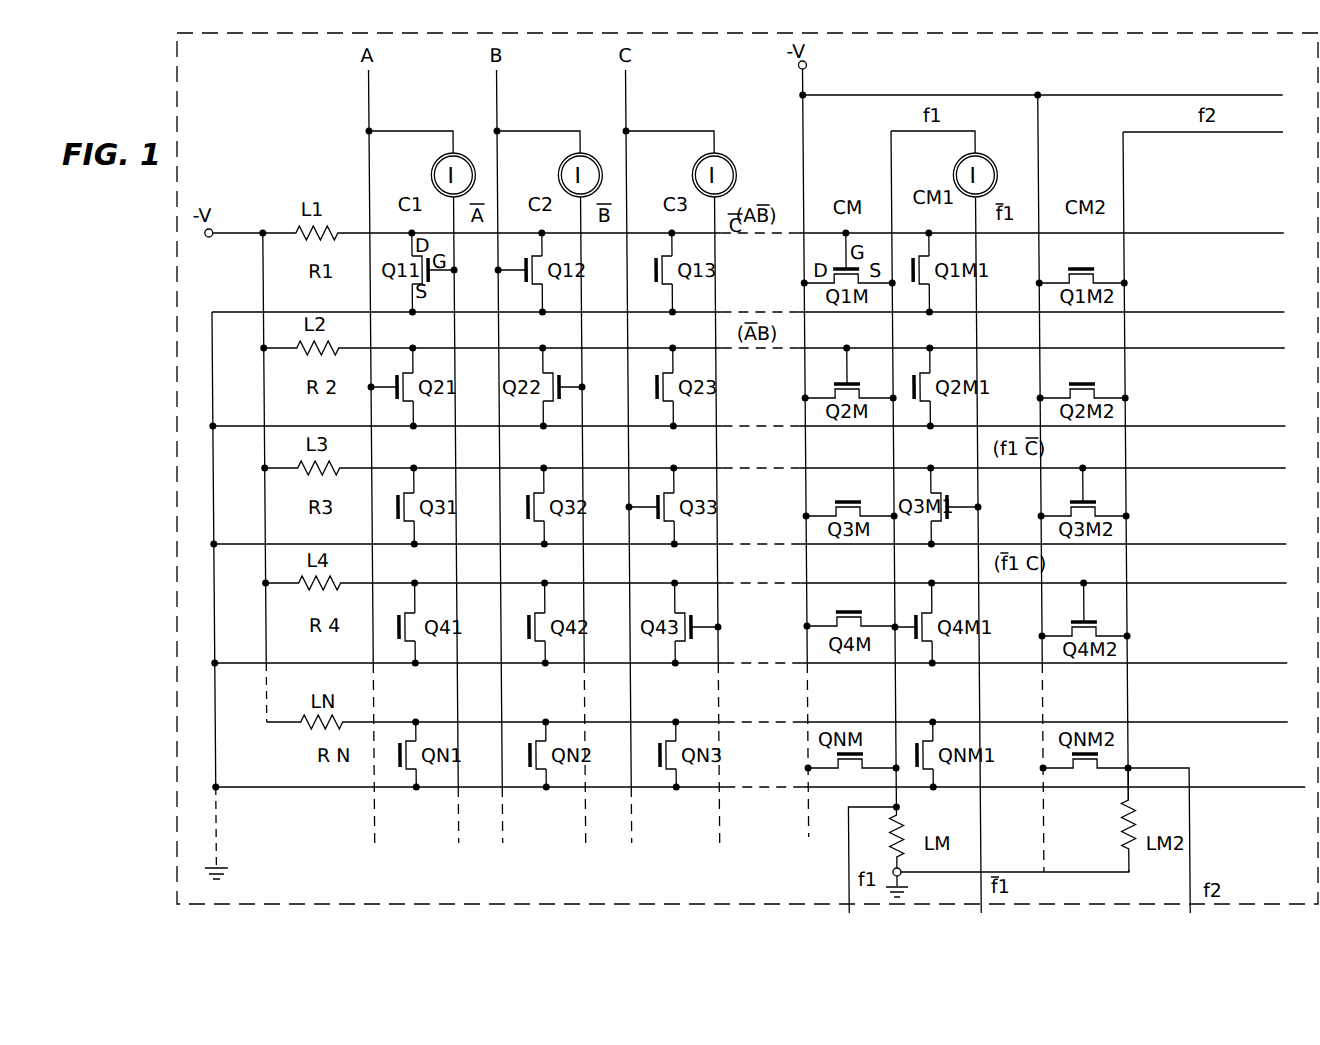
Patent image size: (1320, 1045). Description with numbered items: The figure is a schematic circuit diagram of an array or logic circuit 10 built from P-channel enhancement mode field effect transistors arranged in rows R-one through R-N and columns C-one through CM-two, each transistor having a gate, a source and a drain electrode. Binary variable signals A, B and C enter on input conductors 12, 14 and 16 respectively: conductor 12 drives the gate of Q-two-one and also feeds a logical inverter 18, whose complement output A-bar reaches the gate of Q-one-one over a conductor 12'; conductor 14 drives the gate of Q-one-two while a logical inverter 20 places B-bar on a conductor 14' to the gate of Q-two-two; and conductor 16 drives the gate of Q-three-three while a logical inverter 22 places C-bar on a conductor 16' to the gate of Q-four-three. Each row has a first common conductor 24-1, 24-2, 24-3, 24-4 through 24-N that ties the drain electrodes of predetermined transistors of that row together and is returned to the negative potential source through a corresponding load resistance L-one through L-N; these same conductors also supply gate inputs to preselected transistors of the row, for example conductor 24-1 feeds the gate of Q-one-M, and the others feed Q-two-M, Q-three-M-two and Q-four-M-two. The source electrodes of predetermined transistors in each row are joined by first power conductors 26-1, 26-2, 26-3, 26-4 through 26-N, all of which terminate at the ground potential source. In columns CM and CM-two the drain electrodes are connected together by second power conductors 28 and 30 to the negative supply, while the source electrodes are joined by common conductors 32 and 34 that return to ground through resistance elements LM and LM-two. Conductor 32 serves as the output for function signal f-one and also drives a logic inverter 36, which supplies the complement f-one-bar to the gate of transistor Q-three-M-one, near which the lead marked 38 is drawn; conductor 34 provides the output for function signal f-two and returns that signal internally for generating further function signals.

The logic circuit 10 is at (178, 777).
The input conductor 12 is at (399, 456).
The input conductor 14 is at (527, 456).
The input conductor 16 is at (656, 456).
The logical inverter 18 is at (437, 160).
The logical inverter 20 is at (565, 160).
The logical inverter 22 is at (735, 165).
The conductor 12' is at (478, 520).
The conductor 14' is at (607, 520).
The conductor 16' is at (741, 520).
The second power conductor 28 is at (803, 122).
The second power conductor 30 is at (1038, 153).
The common conductor 32 is at (891, 165).
The common conductor 34 is at (1123, 148).
The logic inverter 36 is at (993, 162).
The transistor Q2M1 38 is at (978, 392).
The first common conductor 24-1 is at (1186, 233).
The first power conductor 26-1 is at (1218, 312).
The first common conductor 24-2 is at (1210, 348).
The first power conductor 26-2 is at (1197, 426).
The first common conductor 24-3 is at (1204, 468).
The first power conductor 26-3 is at (1213, 544).
The first common conductor 24-4 is at (1220, 583).
The first power conductor 26-4 is at (1216, 663).
The first common conductor 24-N is at (1232, 722).
The first power conductor 26-N is at (1240, 787).